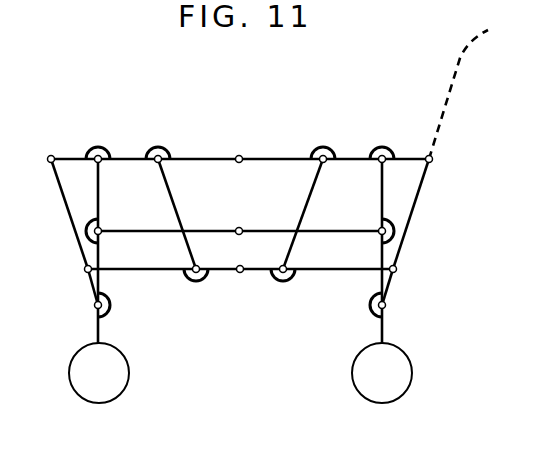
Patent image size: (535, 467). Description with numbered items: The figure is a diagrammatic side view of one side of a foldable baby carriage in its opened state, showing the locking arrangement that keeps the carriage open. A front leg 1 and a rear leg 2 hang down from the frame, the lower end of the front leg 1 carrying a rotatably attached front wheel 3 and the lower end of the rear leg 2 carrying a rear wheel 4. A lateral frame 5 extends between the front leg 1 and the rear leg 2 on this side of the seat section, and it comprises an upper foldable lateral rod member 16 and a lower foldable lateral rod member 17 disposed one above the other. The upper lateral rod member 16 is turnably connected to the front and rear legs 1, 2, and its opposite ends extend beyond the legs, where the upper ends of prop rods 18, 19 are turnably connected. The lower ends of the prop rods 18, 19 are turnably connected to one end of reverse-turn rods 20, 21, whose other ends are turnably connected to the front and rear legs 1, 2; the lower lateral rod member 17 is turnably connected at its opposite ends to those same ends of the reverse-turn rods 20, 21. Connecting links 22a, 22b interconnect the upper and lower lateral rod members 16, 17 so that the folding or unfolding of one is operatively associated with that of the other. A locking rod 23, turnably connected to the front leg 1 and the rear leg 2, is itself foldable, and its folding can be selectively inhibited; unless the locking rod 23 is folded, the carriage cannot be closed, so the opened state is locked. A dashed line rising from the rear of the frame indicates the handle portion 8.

The front leg 1 is at (97, 336).
The rear leg 2 is at (380, 328).
The front wheel 3 is at (130, 382).
The rear wheel 4 is at (352, 372).
The lateral frame 5 is at (276, 158).
The handle 8 is at (460, 58).
The upper foldable lateral rod member 16 is at (202, 158).
The lower foldable lateral rod member 17 is at (157, 270).
The prop rod 18 is at (64, 205).
The prop rod 19 is at (415, 205).
The reverse-turn rod 20 is at (90, 288).
The reverse-turn rod 21 is at (390, 283).
The connecting link 22a is at (170, 189).
The connecting link 22b is at (302, 214).
The locking rod 23 is at (328, 233).